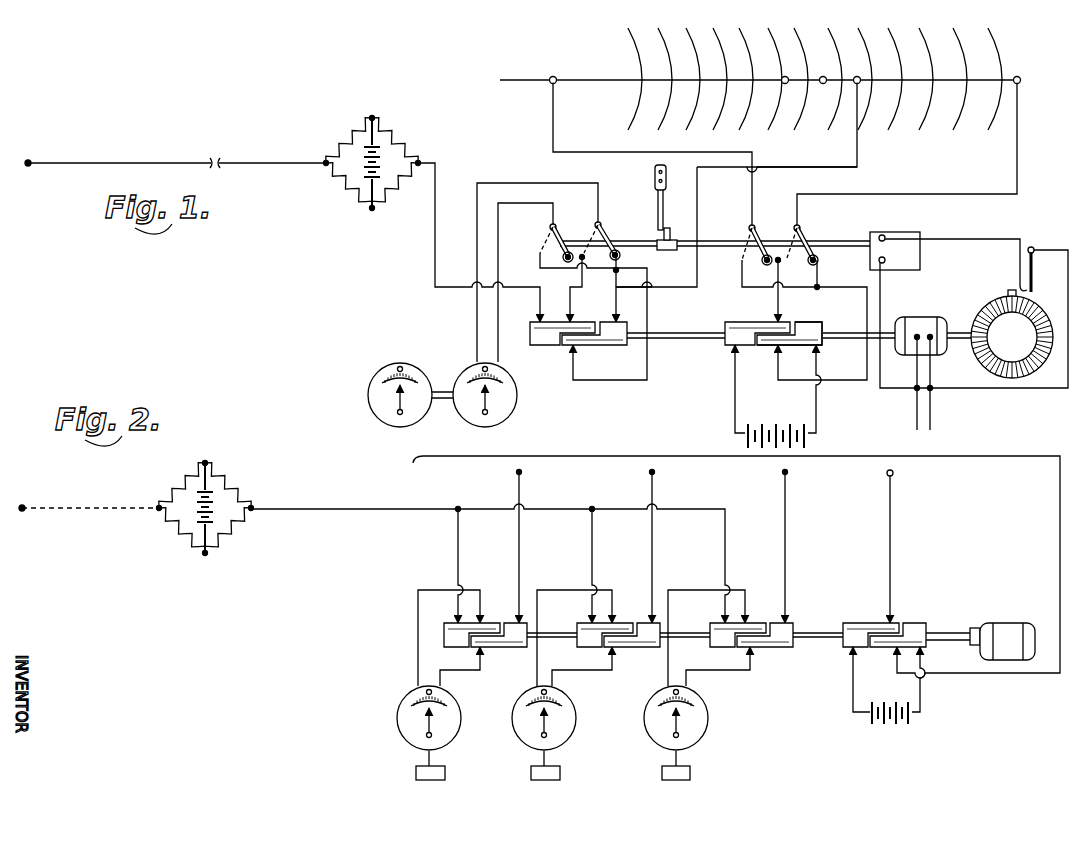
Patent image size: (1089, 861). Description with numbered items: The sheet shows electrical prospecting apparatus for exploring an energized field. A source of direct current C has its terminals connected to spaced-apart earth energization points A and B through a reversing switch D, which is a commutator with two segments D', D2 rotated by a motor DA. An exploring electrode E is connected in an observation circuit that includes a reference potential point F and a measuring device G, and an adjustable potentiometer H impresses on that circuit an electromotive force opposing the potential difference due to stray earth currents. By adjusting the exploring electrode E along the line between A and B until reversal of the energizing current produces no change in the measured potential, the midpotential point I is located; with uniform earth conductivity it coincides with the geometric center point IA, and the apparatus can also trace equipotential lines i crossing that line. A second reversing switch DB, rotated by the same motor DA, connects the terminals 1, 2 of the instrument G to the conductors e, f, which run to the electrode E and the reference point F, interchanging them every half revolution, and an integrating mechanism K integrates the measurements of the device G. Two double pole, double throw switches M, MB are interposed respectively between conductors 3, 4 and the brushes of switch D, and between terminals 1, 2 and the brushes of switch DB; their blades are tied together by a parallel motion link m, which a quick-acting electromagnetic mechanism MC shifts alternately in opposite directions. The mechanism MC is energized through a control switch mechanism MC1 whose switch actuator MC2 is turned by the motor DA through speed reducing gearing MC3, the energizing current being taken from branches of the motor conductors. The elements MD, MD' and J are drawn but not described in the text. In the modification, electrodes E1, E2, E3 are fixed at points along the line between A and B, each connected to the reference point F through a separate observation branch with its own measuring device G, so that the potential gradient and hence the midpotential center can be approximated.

In FIG. 1, the reference potential point F is at (31, 162).
In FIG. 2, the reference potential point F is at (25, 507).
In FIG. 1, the adjustable potentiometer H is at (337, 186).
In FIG. 2, the adjustable potentiometer H is at (239, 482).
In FIG. 1, the conductor f is at (432, 246).
In FIG. 2, the conductor f is at (340, 512).
In FIG. 1, the terminal of instrument G 1 is at (476, 341).
In FIG. 1, the terminal of instrument G 2 is at (497, 336).
In FIG. 1, the conductor 3 is at (598, 152).
In FIG. 1, the conductor 4 is at (886, 194).
In FIG. 2, the conductor 4 is at (892, 552).
In FIG. 1, the earth energization point A is at (558, 78).
In FIG. 2, the earth energization point A is at (412, 468).
In FIG. 1, the geometric center point IA is at (786, 76).
In FIG. 1, the midpotential point I is at (824, 76).
In FIG. 1, the exploring electrode E is at (862, 78).
In FIG. 1, the earth energization point B is at (1022, 79).
In FIG. 2, the earth energization point B is at (893, 475).
In FIG. 1, the equipotential lines i is at (1000, 118).
In FIG. 1, the conductor e is at (697, 192).
In FIG. 2, the conductor e is at (520, 545).
In FIG. 1, the parallel motion link m is at (643, 250).
In FIG. 1, the double pole double throw switch MB is at (575, 243).
In FIG. 1, the carriage on shaft MD is at (673, 225).
In FIG. 1, the pointer MD' is at (640, 197).
In FIG. 1, the double pole double throw switch M is at (764, 240).
In FIG. 1, the reversing switch DB is at (546, 346).
In FIG. 1, the reversing switch D is at (765, 331).
In FIG. 1, the commutator segment D' is at (762, 316).
In FIG. 1, the commutator segment D2 is at (800, 322).
In FIG. 1, the source of direct current C is at (806, 447).
In FIG. 2, the source of direct current C is at (889, 728).
In FIG. 1, the motor DA is at (921, 318).
In FIG. 2, the motor DA is at (1005, 626).
In FIG. 1, the electromagnetic mechanism MC is at (969, 299).
In FIG. 1, the control switch mechanism MC1 is at (1034, 274).
In FIG. 1, the switch actuator MC2 is at (1010, 290).
In FIG. 1, the speed reducing gearing MC3 is at (1011, 382).
In FIG. 1, the integrating mechanism K is at (376, 411).
In FIG. 1, the measuring device G is at (517, 414).
In FIG. 2, the measuring device G is at (511, 718).
In FIG. 2, the recorder J is at (446, 772).
In FIG. 2, the electrode E1 is at (789, 472).
In FIG. 2, the electrode E2 is at (656, 472).
In FIG. 2, the electrode E3 is at (523, 472).